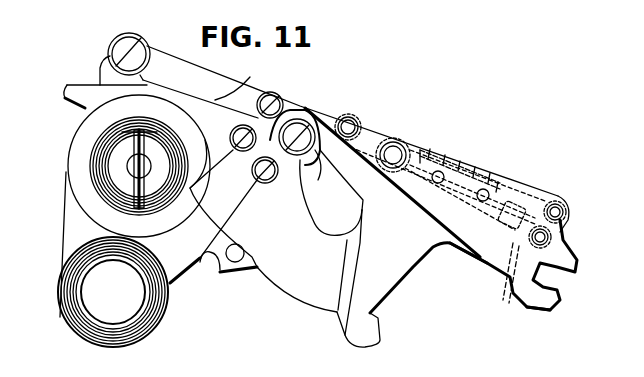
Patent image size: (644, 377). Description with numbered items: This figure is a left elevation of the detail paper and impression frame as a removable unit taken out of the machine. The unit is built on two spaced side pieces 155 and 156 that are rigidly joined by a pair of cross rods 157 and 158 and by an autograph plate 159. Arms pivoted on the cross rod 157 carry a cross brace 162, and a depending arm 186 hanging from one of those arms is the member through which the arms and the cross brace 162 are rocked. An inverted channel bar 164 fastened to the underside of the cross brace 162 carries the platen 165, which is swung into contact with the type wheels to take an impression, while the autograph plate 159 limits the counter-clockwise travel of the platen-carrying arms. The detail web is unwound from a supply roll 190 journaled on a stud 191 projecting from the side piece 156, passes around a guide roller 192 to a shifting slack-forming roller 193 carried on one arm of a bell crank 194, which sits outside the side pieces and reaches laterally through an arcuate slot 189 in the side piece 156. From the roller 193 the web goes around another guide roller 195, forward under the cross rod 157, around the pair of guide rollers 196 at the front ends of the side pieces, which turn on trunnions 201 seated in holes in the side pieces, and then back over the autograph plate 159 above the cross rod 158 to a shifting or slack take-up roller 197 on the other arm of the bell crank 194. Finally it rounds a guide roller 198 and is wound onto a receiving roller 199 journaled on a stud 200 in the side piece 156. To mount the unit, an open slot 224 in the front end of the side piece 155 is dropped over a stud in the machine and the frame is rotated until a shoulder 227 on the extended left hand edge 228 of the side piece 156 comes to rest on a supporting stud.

The side piece 155 is at (565, 258).
The side piece 156 is at (287, 288).
The cross rod 157 is at (398, 145).
The cross rod 158 is at (352, 120).
The autograph plate 159 is at (505, 178).
The cross brace 162 is at (465, 163).
The inverted channel bar 164 is at (553, 200).
The platen 165 is at (498, 230).
The depending arm 186 is at (373, 243).
The arcuate slot 189 is at (311, 213).
The supply roll 190 is at (72, 295).
The stud 191 is at (100, 308).
The guide roller 192 is at (256, 182).
The shifting slack-forming roller 193 is at (320, 158).
The bell crank 194 is at (104, 72).
The guide roller 195 is at (274, 97).
The guide rollers 196 is at (503, 287).
The shifting or slack take-up roller 197 is at (136, 46).
The guide roller 198 is at (230, 127).
The receiving or wind-up roller 199 is at (100, 166).
The stud 200 is at (122, 150).
The trunnions 201 is at (549, 237).
The open slot 224 is at (548, 298).
The shoulder 227 is at (71, 105).
The extended left hand edge 228 is at (72, 232).